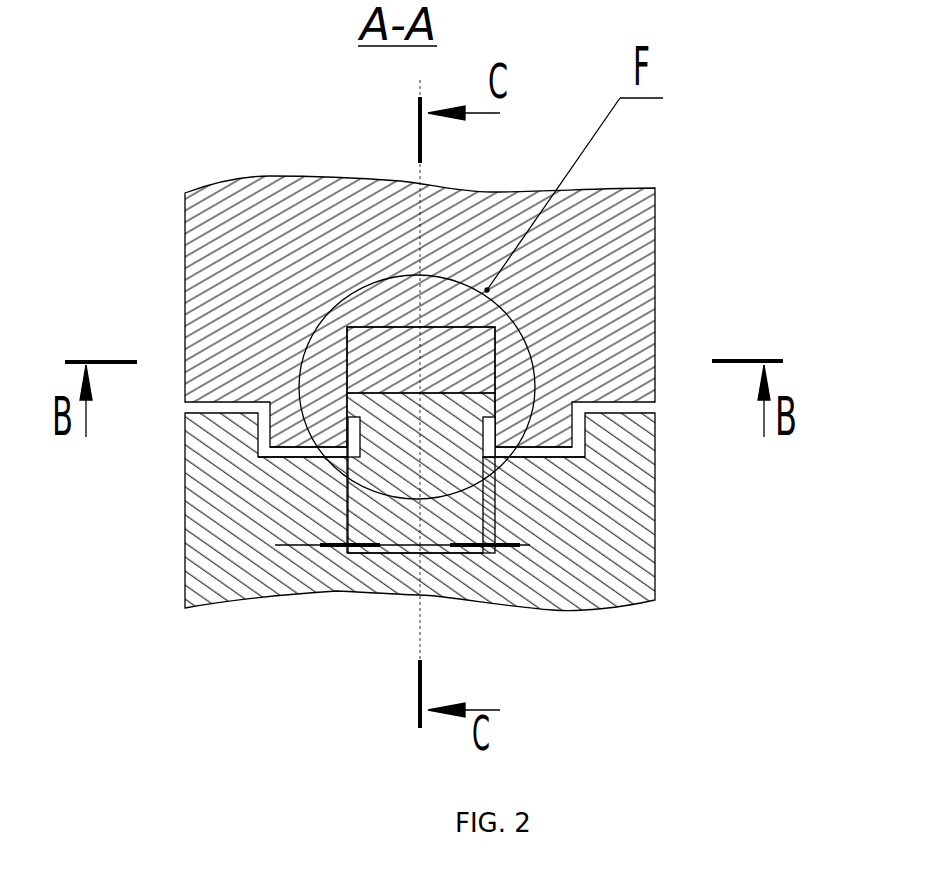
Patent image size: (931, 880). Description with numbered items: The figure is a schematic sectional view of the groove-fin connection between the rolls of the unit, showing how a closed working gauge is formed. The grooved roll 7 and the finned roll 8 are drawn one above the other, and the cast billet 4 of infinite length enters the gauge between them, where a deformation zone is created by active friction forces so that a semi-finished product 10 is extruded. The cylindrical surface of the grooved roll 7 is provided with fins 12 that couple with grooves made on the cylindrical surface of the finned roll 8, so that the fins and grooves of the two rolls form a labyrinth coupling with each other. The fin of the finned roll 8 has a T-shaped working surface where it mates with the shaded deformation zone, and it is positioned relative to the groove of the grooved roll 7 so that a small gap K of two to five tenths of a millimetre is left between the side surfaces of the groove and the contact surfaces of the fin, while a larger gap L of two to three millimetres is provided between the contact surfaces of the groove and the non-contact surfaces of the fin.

The cast billet 4 is at (395, 407).
The grooved roll 7 is at (612, 293).
The finned roll 8 is at (623, 515).
The semi-finished product 10 is at (548, 457).
The fins 12 is at (542, 437).